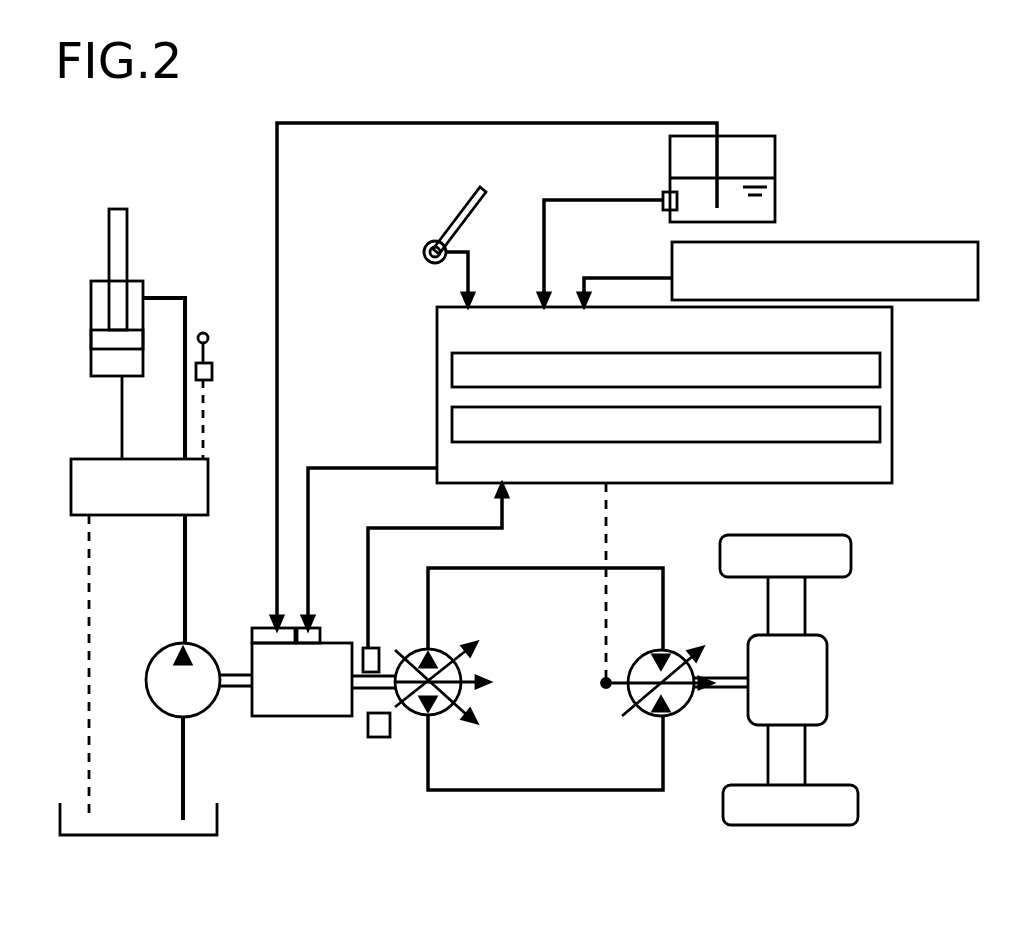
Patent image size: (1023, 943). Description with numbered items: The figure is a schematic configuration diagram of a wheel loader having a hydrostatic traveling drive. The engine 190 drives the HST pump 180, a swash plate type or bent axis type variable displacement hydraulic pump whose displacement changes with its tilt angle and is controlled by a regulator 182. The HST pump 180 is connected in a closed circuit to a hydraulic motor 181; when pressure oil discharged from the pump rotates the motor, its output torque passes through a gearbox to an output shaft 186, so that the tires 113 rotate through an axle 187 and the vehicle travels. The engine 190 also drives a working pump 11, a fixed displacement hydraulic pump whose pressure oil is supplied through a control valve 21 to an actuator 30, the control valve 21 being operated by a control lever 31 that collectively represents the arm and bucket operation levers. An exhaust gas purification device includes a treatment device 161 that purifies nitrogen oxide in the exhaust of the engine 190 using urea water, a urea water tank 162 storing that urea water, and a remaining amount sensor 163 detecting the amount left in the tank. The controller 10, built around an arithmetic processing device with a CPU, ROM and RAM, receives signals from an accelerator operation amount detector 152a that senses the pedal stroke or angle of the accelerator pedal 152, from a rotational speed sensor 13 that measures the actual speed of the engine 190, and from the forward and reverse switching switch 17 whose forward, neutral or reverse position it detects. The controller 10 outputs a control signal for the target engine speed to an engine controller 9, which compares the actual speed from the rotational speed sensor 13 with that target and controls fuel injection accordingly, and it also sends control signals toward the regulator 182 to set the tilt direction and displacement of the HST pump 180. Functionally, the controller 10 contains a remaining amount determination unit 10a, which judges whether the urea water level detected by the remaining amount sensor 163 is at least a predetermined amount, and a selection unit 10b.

The actuator 30 is at (144, 289).
The control lever 31 is at (213, 369).
The control valve 21 is at (165, 516).
The working pump 11 is at (158, 648).
The engine 190 is at (258, 717).
The treatment device 161 is at (272, 622).
The engine controller 9 is at (318, 622).
The rotational speed sensor 13 is at (372, 646).
The HST pump 180 is at (413, 718).
The regulator 182 is at (362, 730).
The hydraulic motor 181 is at (642, 717).
The output shaft 186 is at (732, 690).
The axle 187 is at (827, 690).
The tires 113 is at (851, 552).
The urea water tank 162 is at (775, 190).
The remaining amount sensor 163 is at (662, 193).
The forward and reverse switching switch 17 is at (845, 242).
The accelerator pedal 152 is at (470, 195).
The accelerator operation amount detector 152a is at (424, 246).
The controller 10 is at (892, 405).
The remaining amount determination unit 10a is at (452, 368).
The selection unit 10b is at (452, 415).